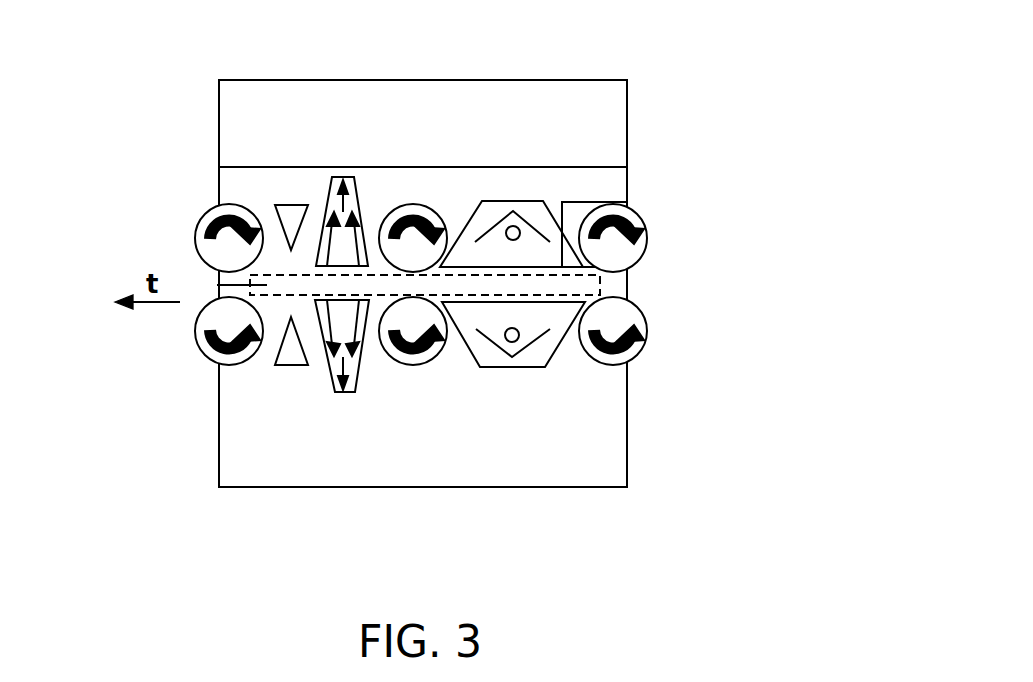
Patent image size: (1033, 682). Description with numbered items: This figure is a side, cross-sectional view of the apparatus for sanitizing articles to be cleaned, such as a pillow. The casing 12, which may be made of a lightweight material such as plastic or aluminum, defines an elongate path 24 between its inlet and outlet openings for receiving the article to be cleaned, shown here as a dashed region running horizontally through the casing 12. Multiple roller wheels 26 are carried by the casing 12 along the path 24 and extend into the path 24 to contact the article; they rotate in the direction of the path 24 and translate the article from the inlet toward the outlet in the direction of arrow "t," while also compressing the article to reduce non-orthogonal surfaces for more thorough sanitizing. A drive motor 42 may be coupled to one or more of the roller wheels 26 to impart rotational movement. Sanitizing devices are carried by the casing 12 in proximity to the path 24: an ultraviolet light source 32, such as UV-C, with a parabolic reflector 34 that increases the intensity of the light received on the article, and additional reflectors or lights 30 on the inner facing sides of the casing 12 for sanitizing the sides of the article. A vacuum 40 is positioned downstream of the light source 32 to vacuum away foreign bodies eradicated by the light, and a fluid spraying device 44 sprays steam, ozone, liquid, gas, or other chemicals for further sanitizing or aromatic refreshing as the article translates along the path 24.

The casing 12 is at (535, 90).
The elongate path 24 is at (608, 286).
The roller wheel 26 is at (413, 203).
The additional reflectors or lights 30 is at (267, 285).
The ultraviolet light source 32 is at (531, 219).
The parabolic reflector 34 is at (519, 226).
The vacuum 40 is at (328, 198).
The drive motor 42 is at (578, 213).
The fluid spraying device 44 is at (292, 212).